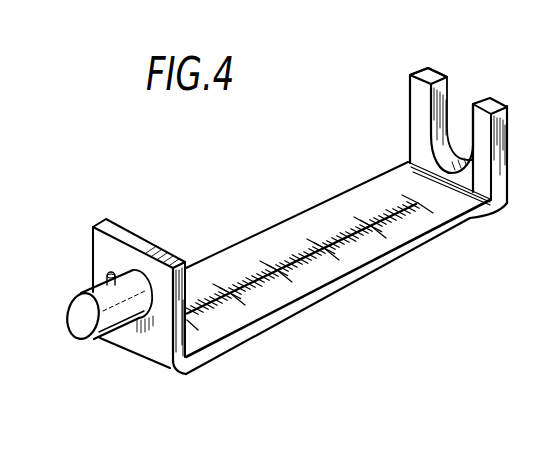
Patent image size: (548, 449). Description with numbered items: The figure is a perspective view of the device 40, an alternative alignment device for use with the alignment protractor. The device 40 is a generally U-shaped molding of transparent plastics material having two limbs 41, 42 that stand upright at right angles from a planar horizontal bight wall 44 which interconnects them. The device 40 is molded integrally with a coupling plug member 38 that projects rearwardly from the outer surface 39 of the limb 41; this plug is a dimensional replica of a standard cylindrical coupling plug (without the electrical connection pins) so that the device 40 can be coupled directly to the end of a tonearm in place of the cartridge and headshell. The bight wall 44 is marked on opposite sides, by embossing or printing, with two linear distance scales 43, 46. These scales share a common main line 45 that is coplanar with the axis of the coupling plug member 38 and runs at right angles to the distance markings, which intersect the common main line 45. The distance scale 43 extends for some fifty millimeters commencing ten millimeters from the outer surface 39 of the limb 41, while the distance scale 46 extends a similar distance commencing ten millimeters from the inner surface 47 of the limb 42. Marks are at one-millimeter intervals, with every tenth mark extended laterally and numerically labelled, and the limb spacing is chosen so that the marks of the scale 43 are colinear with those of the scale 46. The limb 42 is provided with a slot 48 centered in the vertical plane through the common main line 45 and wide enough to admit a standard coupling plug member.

The coupling plug member 38 is at (84, 340).
The outer surface of limb 41 39 is at (157, 343).
The device 40 is at (340, 305).
The limb 41 is at (137, 237).
The limb 42 is at (426, 69).
The distance scale 43 is at (369, 240).
The bight wall 44 is at (408, 230).
The common main line 45 is at (261, 292).
The distance scale 46 is at (367, 211).
The inner surface of limb 42 47 is at (417, 120).
The slot 48 is at (445, 115).